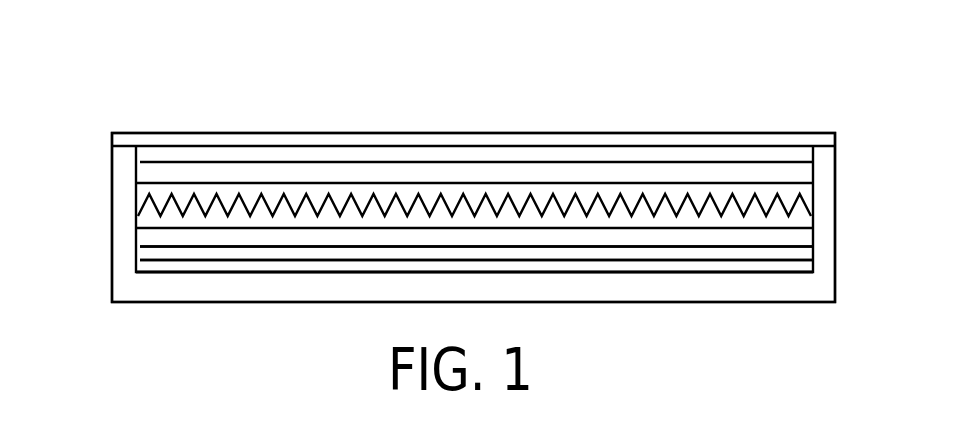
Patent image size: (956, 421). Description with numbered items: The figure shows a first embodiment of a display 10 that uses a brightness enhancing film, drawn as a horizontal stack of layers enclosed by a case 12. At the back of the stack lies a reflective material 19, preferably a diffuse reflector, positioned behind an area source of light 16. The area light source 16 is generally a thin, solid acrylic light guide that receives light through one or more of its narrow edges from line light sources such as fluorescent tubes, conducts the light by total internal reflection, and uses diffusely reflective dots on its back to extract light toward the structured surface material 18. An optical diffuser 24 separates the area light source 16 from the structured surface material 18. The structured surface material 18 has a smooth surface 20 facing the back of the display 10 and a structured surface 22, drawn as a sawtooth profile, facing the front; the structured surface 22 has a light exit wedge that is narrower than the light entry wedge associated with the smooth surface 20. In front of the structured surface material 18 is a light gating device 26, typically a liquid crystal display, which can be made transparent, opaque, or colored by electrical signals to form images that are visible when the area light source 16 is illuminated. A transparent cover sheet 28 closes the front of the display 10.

The display 10 is at (792, 84).
The case 12 is at (822, 286).
The area source of light 16 is at (145, 256).
The structured surface material 18 is at (800, 210).
The reflective material 19 is at (145, 268).
The smooth surface 20 is at (190, 230).
The structured surface 22 is at (182, 198).
The optical diffuser 24 is at (802, 237).
The light gating device 26 is at (145, 171).
The transparent cover sheet 28 is at (385, 133).